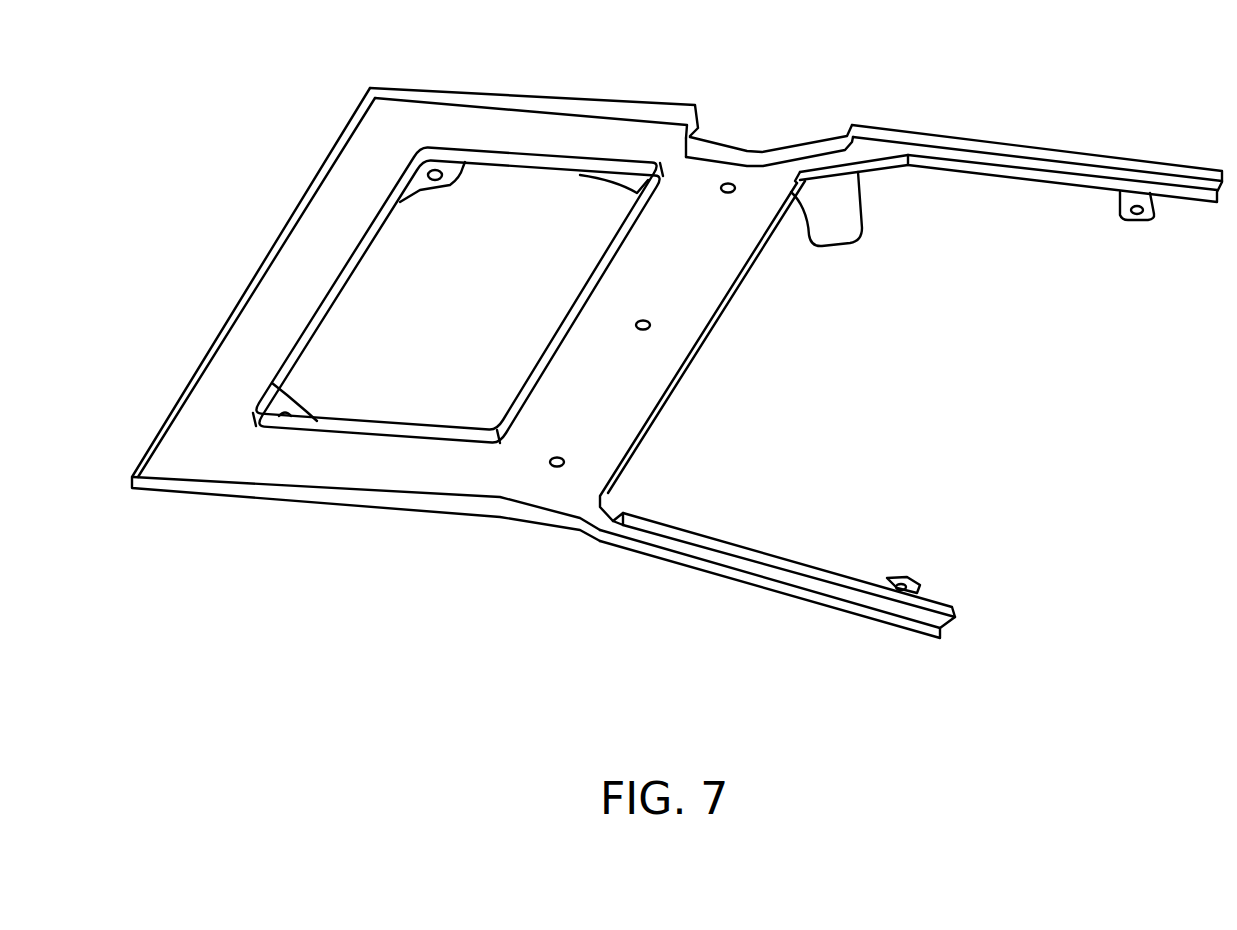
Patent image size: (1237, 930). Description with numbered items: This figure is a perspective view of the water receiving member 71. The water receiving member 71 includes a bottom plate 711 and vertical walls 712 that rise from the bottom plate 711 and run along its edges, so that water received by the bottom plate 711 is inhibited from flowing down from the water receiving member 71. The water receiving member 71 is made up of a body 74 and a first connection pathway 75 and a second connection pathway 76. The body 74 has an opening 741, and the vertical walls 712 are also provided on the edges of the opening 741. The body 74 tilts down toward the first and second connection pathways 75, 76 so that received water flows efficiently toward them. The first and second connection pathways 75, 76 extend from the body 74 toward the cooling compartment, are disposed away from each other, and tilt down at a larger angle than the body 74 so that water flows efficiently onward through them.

The water receiving member 71 is at (306, 108).
The bottom plate 711 is at (518, 138).
The vertical walls 712 is at (717, 278).
The opening 741 is at (278, 311).
The body 74 is at (712, 327).
The first connection pathway 75 is at (1100, 171).
The second connection pathway 76 is at (790, 578).